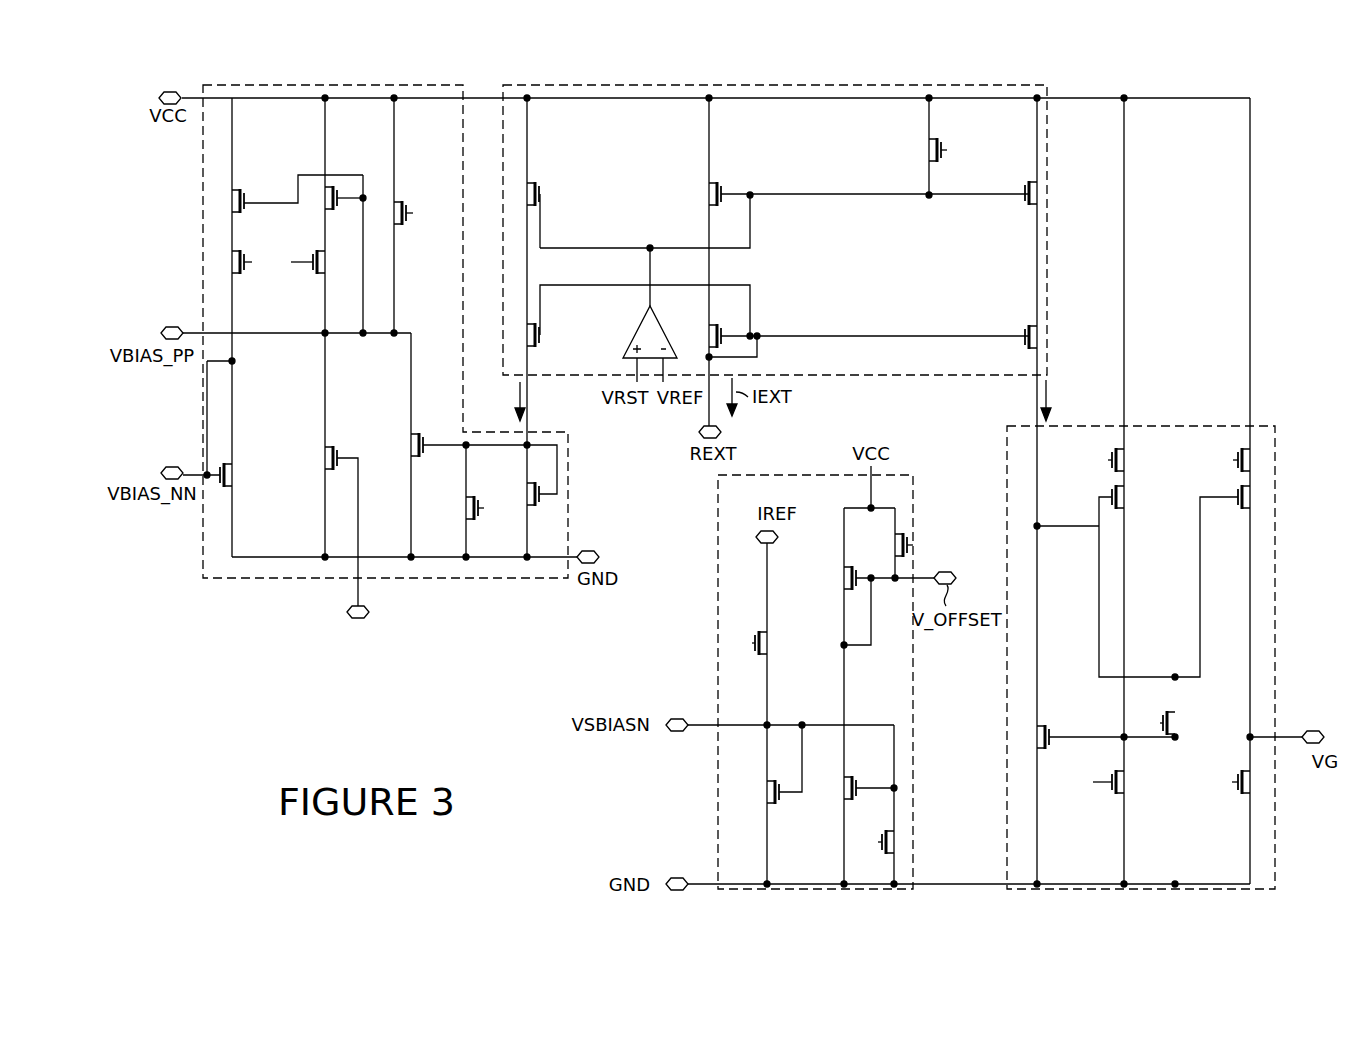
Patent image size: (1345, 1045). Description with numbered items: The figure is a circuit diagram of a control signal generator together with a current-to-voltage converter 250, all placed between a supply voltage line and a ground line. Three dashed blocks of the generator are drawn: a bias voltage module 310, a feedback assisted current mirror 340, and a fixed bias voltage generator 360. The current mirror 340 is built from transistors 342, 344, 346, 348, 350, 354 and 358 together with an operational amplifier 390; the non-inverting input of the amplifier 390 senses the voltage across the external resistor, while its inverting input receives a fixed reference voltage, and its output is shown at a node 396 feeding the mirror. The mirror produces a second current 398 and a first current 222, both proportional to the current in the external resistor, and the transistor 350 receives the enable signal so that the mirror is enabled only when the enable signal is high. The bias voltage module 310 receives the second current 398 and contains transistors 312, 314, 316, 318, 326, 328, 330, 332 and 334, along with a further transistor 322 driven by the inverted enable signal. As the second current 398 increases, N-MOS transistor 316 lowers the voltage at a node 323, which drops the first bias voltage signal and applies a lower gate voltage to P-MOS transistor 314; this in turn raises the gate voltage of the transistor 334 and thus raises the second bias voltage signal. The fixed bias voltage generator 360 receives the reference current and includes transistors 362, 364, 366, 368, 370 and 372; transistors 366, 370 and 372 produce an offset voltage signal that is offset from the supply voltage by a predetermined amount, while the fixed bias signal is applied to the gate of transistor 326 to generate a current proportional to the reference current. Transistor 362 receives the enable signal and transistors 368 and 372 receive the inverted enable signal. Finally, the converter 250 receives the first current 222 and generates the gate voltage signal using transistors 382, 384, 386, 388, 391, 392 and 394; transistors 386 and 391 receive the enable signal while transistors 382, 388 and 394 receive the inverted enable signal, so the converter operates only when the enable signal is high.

The bias voltage module 310 is at (342, 85).
The transistor 312 is at (535, 487).
The P-MOS transistor 314 is at (244, 199).
The N-MOS transistor 316 is at (418, 434).
The transistor 318 is at (244, 258).
The transistor 322 is at (318, 275).
The node 323 is at (363, 338).
The transistor 326 is at (337, 447).
The transistor 328 is at (337, 190).
The transistor 330 is at (406, 205).
The transistor 332 is at (470, 502).
The transistor 334 is at (228, 462).
The feedback assisted current mirror 340 is at (868, 86).
The transistor 342 is at (540, 185).
The transistor 344 is at (540, 345).
The transistor 346 is at (722, 186).
The transistor 348 is at (721, 331).
The transistor 350 is at (937, 141).
The transistor 354 is at (1029, 190).
The transistor 358 is at (1030, 330).
The fixed bias voltage generator 360 is at (718, 826).
The transistor 362 is at (770, 646).
The transistor 364 is at (766, 792).
The transistor 366 is at (850, 786).
The transistor 368 is at (888, 834).
The transistor 370 is at (850, 576).
The transistor 372 is at (902, 556).
The transistor 382 is at (1128, 468).
The transistor 384 is at (1130, 508).
The transistor 386 is at (1128, 792).
The transistor 388 is at (1178, 730).
The operational amplifier 390 is at (638, 333).
The transistor 391 is at (1248, 795).
The transistor 392 is at (1256, 507).
The transistor 394 is at (1256, 454).
The node 396 is at (650, 246).
The second current 398 is at (516, 393).
The first current 222 is at (1050, 396).
The IV converter 250 is at (1166, 426).